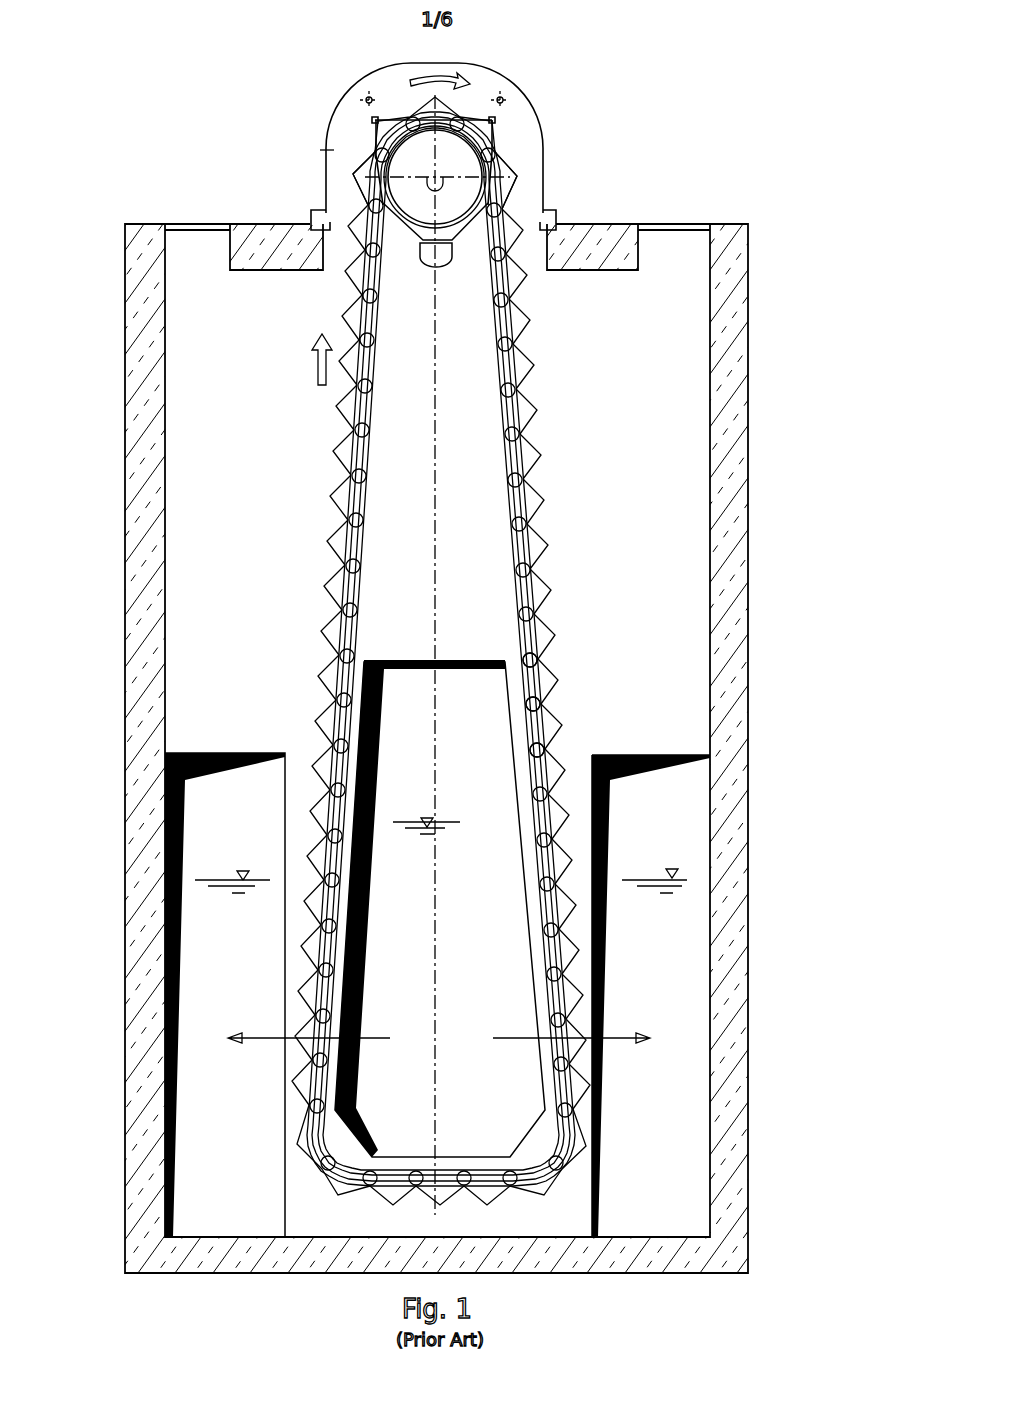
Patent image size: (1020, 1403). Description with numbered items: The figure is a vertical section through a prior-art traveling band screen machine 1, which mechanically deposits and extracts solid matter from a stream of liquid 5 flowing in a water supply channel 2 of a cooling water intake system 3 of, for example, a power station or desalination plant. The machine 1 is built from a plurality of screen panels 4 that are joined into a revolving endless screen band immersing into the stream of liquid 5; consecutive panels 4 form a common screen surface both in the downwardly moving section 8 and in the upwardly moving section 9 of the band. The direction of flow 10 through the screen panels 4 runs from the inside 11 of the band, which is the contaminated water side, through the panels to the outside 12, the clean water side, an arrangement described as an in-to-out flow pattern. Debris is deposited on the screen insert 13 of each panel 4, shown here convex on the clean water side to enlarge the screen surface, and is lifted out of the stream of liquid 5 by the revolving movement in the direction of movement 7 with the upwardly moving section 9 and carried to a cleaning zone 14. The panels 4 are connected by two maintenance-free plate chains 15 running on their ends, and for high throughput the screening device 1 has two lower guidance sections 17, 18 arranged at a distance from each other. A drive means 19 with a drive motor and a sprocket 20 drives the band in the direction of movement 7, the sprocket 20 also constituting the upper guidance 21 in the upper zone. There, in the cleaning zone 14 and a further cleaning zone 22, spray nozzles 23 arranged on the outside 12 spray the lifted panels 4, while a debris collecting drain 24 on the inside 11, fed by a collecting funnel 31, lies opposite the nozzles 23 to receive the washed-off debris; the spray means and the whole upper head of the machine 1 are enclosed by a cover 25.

The traveling band screen machine 1 is at (684, 94).
The water supply channel 2 is at (513, 1218).
The cooling water intake system 3 is at (140, 947).
The screen panels 4 is at (540, 500).
The stream of liquid 5 is at (342, 950).
The direction of movement 7 is at (443, 77).
The downwardly moving section 8 is at (565, 610).
The upwardly moving section 9 is at (300, 493).
The direction of flow 10 is at (618, 1034).
The inside of the endless screen band 11 is at (455, 620).
The outside of the endless screen band 12 is at (262, 681).
The screen insert 13 is at (535, 487).
The cleaning zone 14 is at (510, 122).
The plate chains 15 is at (545, 697).
The lower guidance section 17 is at (553, 1167).
The lower guidance section 18 is at (325, 1168).
The drive means 19 is at (410, 120).
The sprocket 20 is at (500, 172).
The upper guidance 21 is at (568, 122).
The further cleaning zone 22 is at (370, 143).
The spray nozzles 23 is at (368, 100).
The debris collecting drain 24 is at (433, 262).
The cover 25 is at (327, 168).
The collecting funnel 31 is at (478, 235).